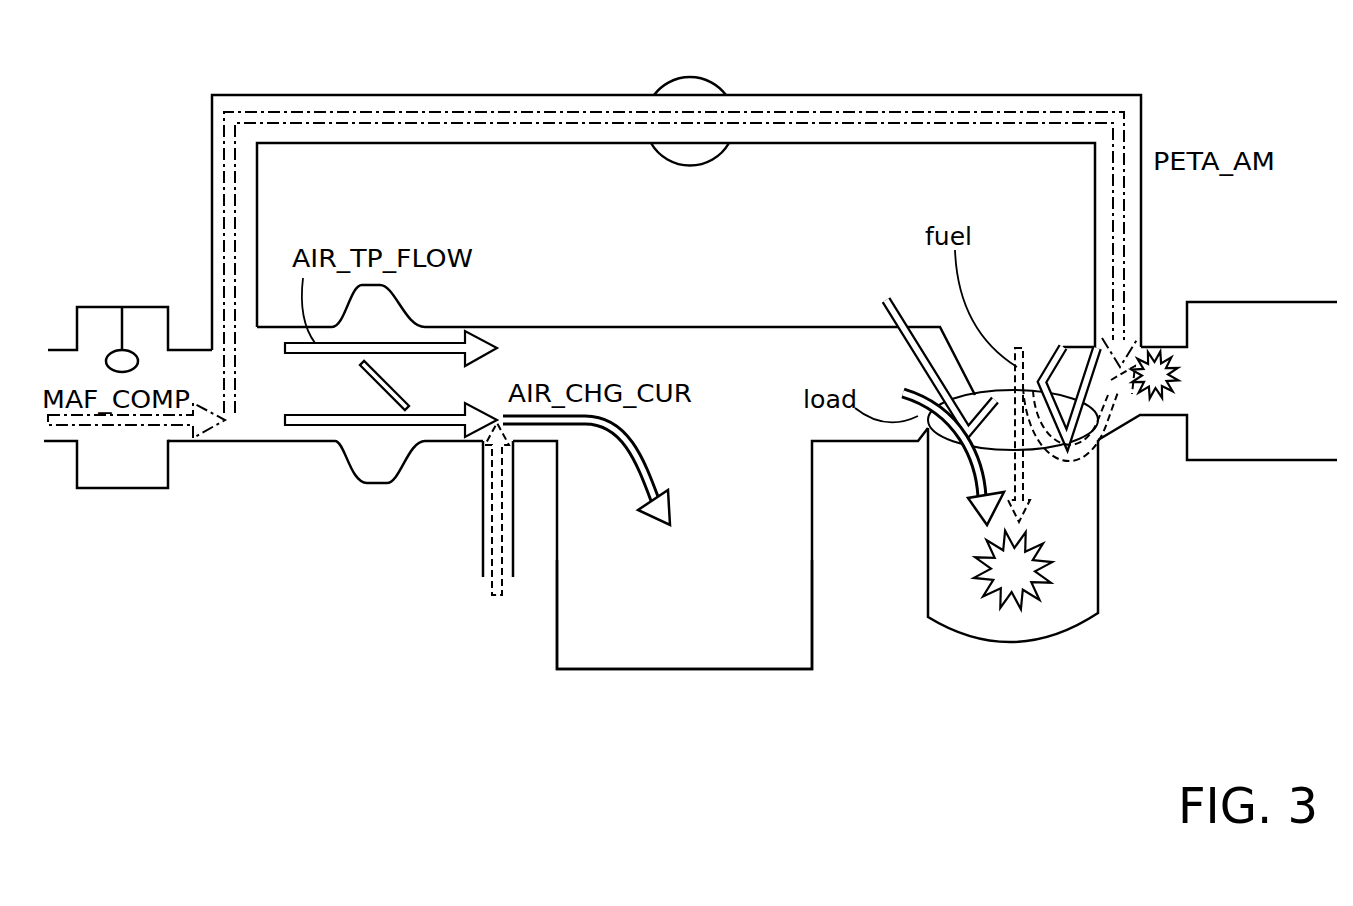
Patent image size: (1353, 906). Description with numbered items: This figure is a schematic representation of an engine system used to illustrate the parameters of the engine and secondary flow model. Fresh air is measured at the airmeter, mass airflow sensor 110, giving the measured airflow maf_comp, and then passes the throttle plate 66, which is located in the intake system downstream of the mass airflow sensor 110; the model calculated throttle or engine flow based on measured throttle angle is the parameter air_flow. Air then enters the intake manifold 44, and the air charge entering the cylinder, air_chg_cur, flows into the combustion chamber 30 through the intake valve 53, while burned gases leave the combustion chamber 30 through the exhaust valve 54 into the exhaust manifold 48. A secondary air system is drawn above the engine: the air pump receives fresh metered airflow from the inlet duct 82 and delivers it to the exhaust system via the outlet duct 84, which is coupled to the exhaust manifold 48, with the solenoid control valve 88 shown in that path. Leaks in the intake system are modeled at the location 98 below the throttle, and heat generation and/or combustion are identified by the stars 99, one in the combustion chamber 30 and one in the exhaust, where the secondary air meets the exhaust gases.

The combustion chamber 30 is at (1060, 637).
The intake manifold 44 is at (675, 669).
The exhaust manifold 48 is at (1262, 460).
The intake valve 53 is at (885, 302).
The exhaust valve 54 is at (1092, 347).
The throttle plate 66 is at (387, 390).
The inlet duct 82 is at (340, 93).
The outlet duct 84 is at (1074, 92).
The solenoid control valve 88 is at (718, 82).
The modeled leaks 98 is at (482, 552).
The stars indicating heat generation and/or combustion 99 is at (1162, 347).
The mass airflow sensor 110 is at (125, 488).